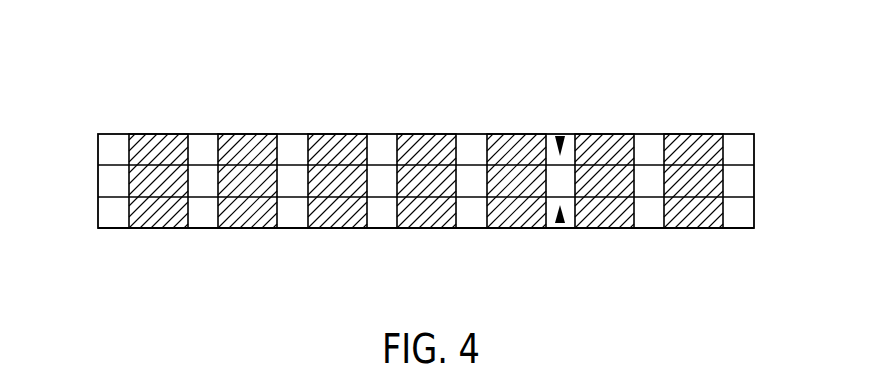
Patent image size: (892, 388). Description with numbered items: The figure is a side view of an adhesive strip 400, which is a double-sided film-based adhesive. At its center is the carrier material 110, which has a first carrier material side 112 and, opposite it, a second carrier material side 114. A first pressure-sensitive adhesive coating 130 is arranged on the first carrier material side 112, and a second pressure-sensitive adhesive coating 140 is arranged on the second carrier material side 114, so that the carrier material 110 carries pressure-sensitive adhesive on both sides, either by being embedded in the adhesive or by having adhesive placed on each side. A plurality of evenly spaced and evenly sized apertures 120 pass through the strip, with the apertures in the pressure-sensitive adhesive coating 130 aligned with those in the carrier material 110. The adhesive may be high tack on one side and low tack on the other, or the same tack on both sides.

The adhesive strip 400 is at (781, 49).
The pressure-sensitive adhesive coating 130 is at (98, 150).
The carrier material 110 is at (98, 184).
The second pressure-sensitive adhesive coating 140 is at (98, 214).
The apertures 120 is at (164, 147).
The first carrier material side 112 is at (559, 136).
The second carrier material side 114 is at (560, 228).